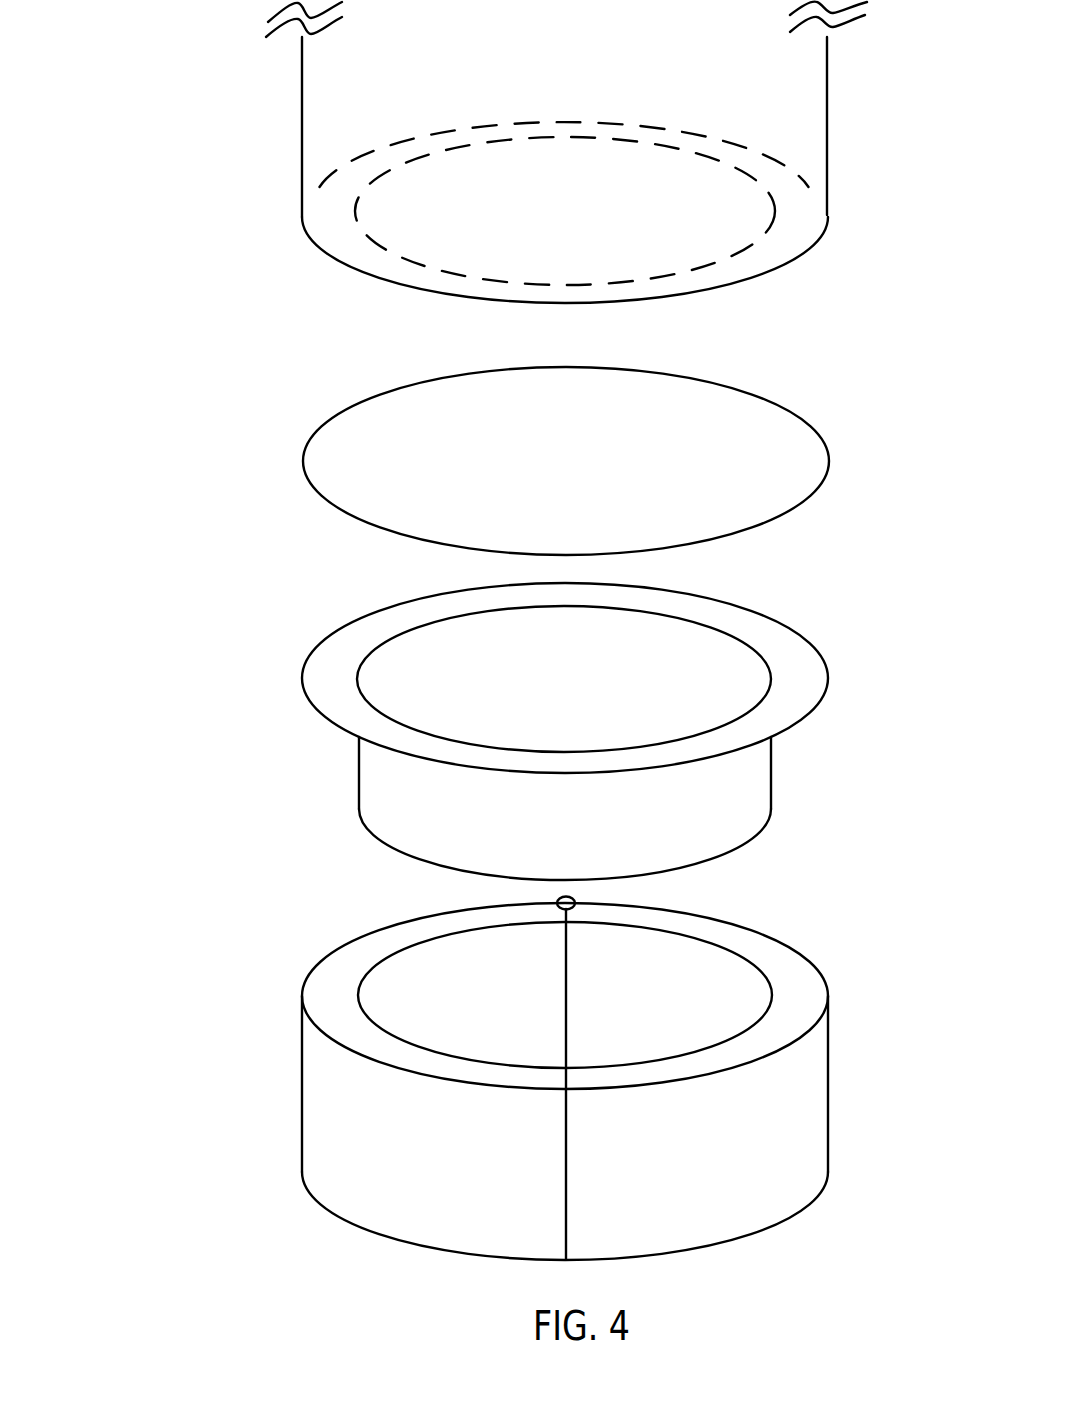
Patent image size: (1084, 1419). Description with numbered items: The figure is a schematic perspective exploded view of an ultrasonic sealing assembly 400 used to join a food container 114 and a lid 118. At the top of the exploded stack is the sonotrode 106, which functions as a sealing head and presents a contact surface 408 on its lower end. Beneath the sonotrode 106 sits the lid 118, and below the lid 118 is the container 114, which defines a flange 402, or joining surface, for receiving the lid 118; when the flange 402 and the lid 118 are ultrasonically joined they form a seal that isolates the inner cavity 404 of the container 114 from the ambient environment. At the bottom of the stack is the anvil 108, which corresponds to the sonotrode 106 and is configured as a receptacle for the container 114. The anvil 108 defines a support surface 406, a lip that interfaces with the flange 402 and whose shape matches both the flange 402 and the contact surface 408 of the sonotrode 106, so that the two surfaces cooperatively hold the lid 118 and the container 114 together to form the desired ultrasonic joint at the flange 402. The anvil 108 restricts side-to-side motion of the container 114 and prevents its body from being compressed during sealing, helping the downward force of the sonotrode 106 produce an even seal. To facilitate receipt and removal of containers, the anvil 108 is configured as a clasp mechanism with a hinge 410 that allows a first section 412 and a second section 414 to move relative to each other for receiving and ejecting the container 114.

The ultrasonic sealing assembly 400 is at (97, 102).
The sonotrode 106 is at (818, 107).
The contact surface 408 is at (780, 263).
The lid 118 is at (790, 445).
The flange 402 is at (801, 651).
The inner cavity 404 is at (437, 688).
The container 114 is at (773, 759).
The hinge 410 is at (574, 899).
The support surface 406 is at (802, 983).
The anvil 108 is at (603, 1090).
The first section 412 is at (358, 1211).
The second section 414 is at (743, 1218).